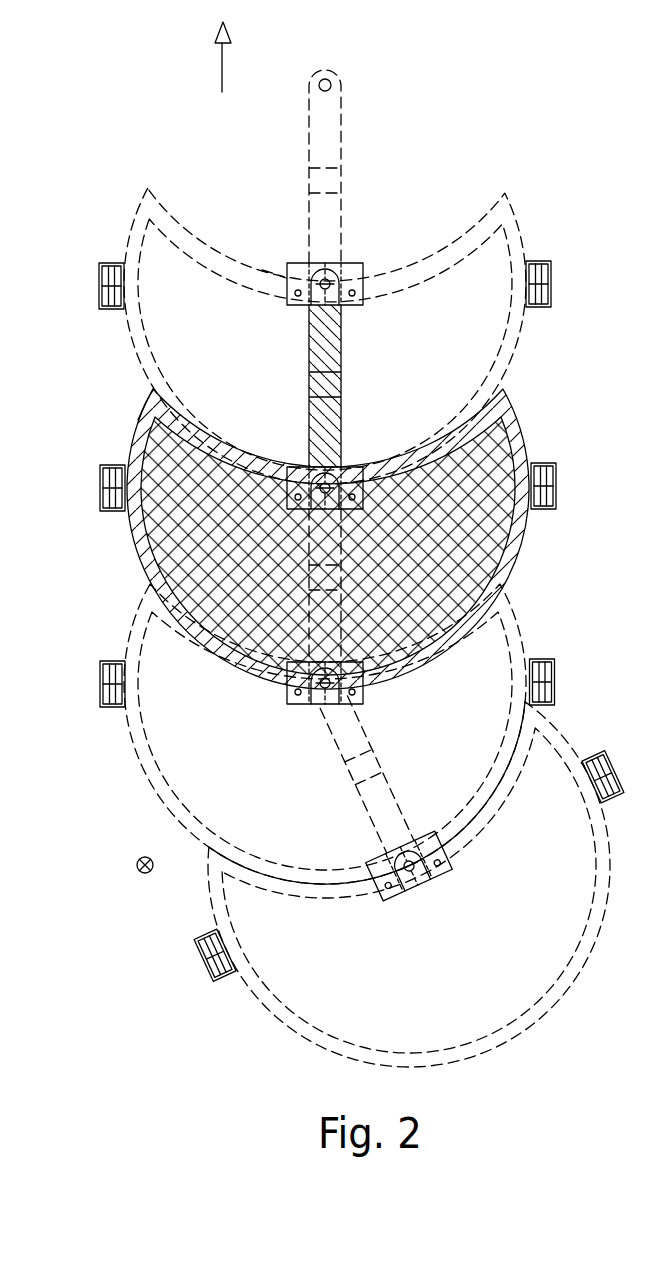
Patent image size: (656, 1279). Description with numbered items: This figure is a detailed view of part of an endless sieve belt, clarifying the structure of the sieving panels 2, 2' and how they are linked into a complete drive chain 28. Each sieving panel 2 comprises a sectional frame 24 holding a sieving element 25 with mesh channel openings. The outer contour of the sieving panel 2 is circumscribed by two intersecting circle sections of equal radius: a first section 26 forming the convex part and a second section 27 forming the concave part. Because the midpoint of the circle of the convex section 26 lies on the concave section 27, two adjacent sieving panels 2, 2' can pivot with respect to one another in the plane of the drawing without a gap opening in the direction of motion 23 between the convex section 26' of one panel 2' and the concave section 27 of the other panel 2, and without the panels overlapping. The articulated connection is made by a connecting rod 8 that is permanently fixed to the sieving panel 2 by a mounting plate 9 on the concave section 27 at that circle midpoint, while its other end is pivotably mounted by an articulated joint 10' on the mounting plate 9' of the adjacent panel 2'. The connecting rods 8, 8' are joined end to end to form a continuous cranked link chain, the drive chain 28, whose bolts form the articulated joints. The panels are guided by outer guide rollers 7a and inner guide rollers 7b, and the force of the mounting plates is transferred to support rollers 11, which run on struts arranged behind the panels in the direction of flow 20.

The sieving panel 2 is at (301, 540).
The adjacent sieving panel 2' is at (303, 344).
The outer guide roller 7a is at (105, 492).
The inner guide roller 7b is at (555, 468).
The connecting rod 8 is at (404, 378).
The connecting rod 8' is at (380, 166).
The mounting plate 9 is at (107, 360).
The mounting plate 9' is at (176, 224).
The articulated joint 10' is at (351, 200).
The support roller 11 is at (300, 505).
The direction of flow 20 is at (136, 866).
The direction of motion 23 is at (222, 57).
The sectional frame 24 is at (158, 578).
The sieving element 25 is at (182, 640).
The first section of circle 26 is at (383, 540).
The convex section 26' is at (386, 336).
The second section of circle 27 is at (193, 450).
The drive chain 28 is at (547, 60).